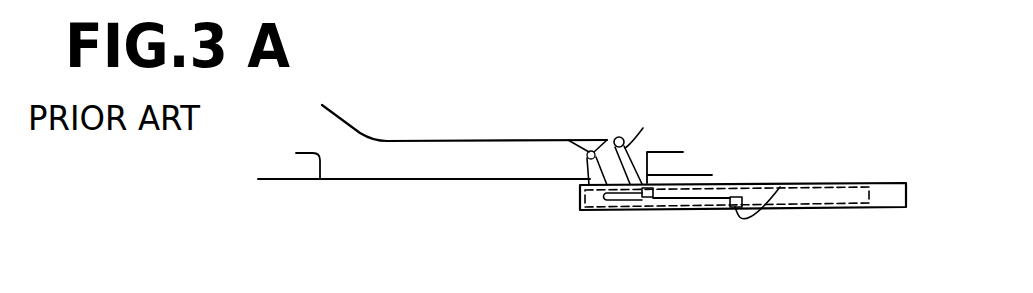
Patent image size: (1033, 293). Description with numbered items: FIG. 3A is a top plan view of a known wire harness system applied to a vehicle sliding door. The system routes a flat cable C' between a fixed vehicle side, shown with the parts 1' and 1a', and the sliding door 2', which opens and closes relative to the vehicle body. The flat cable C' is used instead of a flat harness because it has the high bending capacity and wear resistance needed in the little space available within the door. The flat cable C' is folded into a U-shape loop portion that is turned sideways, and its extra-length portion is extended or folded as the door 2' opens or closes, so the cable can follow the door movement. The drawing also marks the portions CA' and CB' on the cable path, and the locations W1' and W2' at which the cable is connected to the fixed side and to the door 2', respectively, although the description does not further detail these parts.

The lever arm (prior art) 1' is at (432, 183).
The stopper portion of lever 1a' is at (350, 200).
The door 2' is at (744, 233).
The first wire W1' is at (661, 98).
The second wire W2' is at (799, 173).
The flat cable C' is at (694, 139).
The cam slot CA' is at (609, 225).
The cam block CB' is at (751, 154).